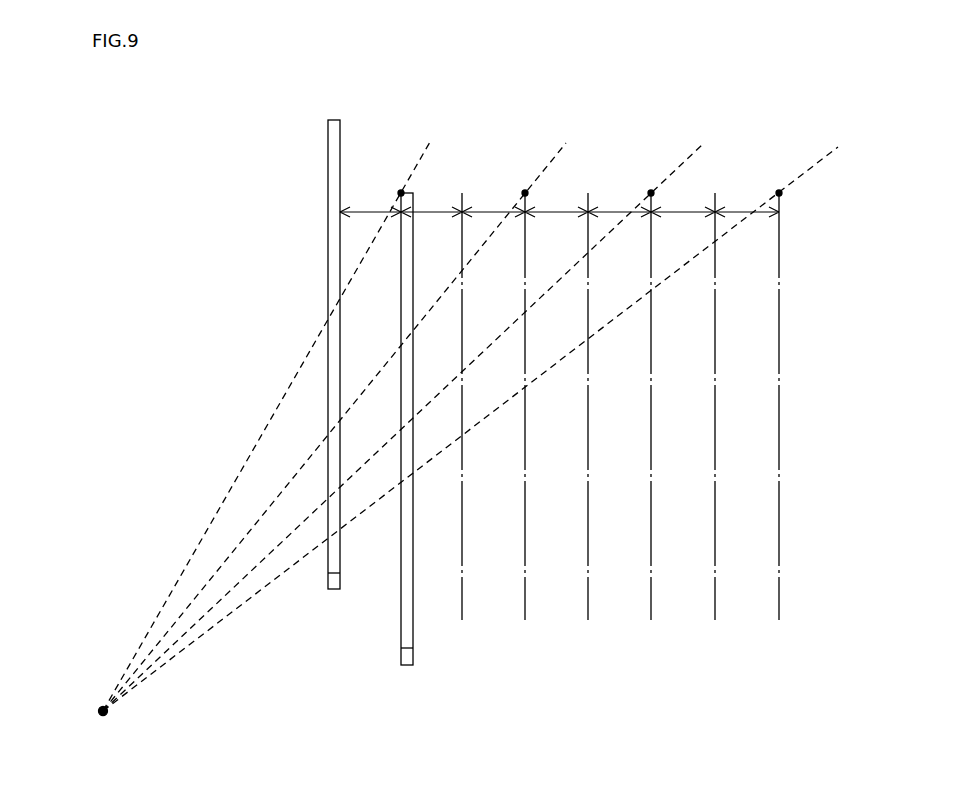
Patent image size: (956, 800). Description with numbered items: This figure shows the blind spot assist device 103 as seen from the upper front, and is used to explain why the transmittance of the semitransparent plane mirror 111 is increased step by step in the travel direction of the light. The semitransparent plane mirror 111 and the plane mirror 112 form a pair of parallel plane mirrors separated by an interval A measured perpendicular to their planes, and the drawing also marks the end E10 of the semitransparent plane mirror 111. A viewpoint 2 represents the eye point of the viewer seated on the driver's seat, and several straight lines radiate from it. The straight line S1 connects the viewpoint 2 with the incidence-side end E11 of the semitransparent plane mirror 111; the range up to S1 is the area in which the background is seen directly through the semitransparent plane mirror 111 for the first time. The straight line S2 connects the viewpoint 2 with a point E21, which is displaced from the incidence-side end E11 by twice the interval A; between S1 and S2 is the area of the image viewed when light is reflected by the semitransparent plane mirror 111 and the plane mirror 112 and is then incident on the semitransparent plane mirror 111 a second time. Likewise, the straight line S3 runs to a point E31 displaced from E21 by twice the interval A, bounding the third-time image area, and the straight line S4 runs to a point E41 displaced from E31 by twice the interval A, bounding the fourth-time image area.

The viewpoint 2 is at (108, 716).
The first element / reference bar E10 is at (332, 120).
The incidence-side end E11 is at (404, 191).
The point E21 is at (528, 191).
The point E31 is at (654, 191).
The point E41 is at (782, 193).
The straight line S1 is at (280, 416).
The straight line S2 is at (348, 416).
The straight line S3 is at (416, 416).
The straight line S4 is at (483, 416).
The interval A is at (370, 199).
The semitransparent plane mirror 111 is at (340, 573).
The plane mirror 112 is at (413, 648).
The blind spot assist device 103 is at (410, 687).